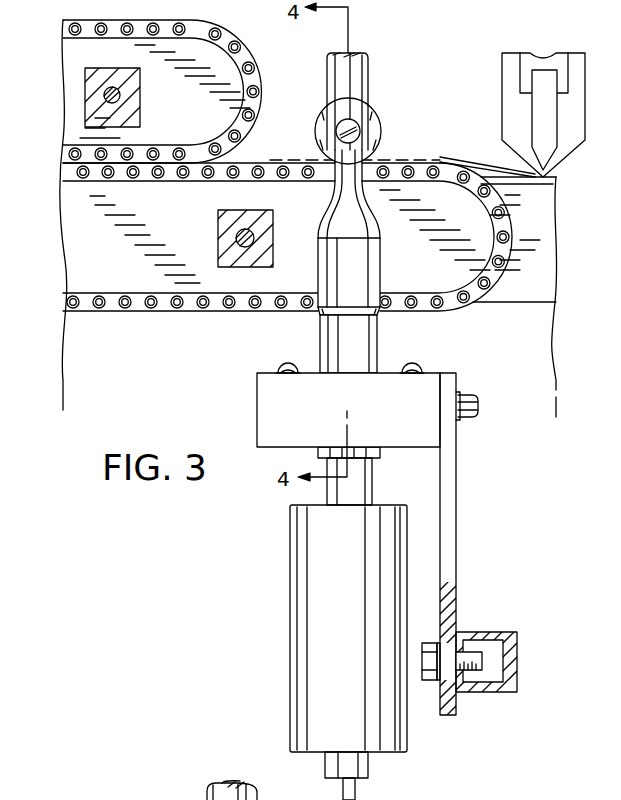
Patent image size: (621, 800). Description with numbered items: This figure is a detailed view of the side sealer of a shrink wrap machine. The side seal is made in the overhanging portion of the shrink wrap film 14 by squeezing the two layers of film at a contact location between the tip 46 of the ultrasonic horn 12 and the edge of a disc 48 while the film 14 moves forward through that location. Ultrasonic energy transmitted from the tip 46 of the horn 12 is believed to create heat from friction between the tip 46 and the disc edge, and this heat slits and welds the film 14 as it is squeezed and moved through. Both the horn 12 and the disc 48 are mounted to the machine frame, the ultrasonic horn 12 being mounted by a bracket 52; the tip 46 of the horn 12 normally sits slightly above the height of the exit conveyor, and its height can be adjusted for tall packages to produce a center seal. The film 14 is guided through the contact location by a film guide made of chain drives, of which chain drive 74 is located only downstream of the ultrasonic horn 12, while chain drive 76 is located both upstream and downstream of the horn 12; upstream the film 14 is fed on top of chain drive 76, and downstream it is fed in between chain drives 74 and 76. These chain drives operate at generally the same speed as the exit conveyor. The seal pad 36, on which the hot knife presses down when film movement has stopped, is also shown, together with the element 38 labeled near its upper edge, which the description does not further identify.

The ultrasonic horn 12 is at (298, 337).
The shrink wrap film 14 is at (473, 158).
The seal pad 36 is at (538, 255).
The guide edge 38 is at (552, 178).
The tip 46 is at (352, 186).
The disc 48 is at (374, 116).
The bracket 52 is at (442, 390).
The chain drive 74 is at (166, 22).
The chain drive 76 is at (141, 306).